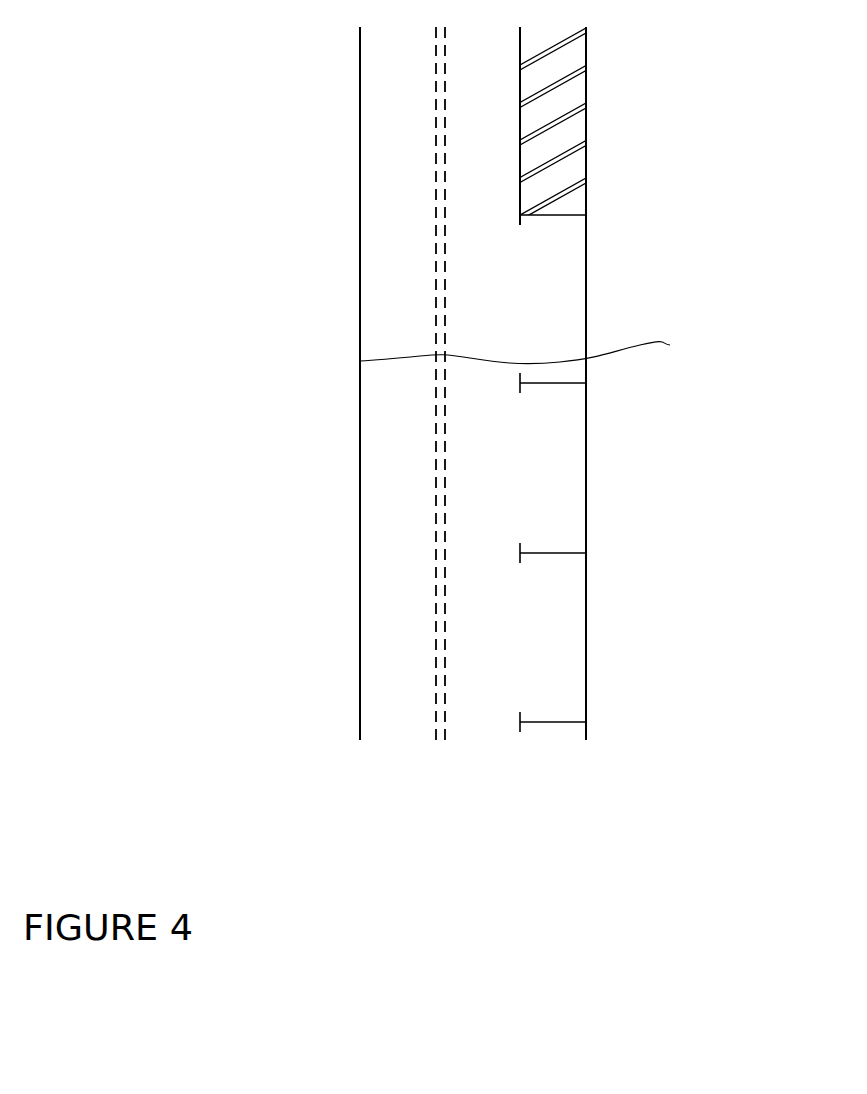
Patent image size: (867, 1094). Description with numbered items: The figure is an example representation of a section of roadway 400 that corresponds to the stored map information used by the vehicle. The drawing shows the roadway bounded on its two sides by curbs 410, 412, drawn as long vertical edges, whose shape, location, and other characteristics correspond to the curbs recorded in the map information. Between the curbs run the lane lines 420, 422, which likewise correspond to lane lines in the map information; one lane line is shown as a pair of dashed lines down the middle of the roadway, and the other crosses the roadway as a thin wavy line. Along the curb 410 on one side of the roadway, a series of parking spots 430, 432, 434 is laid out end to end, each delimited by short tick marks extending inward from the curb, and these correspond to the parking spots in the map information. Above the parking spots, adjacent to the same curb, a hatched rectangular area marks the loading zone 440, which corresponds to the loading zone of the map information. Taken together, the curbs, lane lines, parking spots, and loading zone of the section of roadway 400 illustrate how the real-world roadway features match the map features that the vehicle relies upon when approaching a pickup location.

The section of roadway 400 is at (128, 881).
The curb 410 is at (587, 279).
The curb 412 is at (360, 103).
The lane line 420 is at (540, 349).
The lane line 422 is at (360, 361).
The parking spot 430 is at (570, 651).
The parking spot 432 is at (572, 477).
The parking spot 434 is at (572, 309).
The loading zone 440 is at (603, 123).